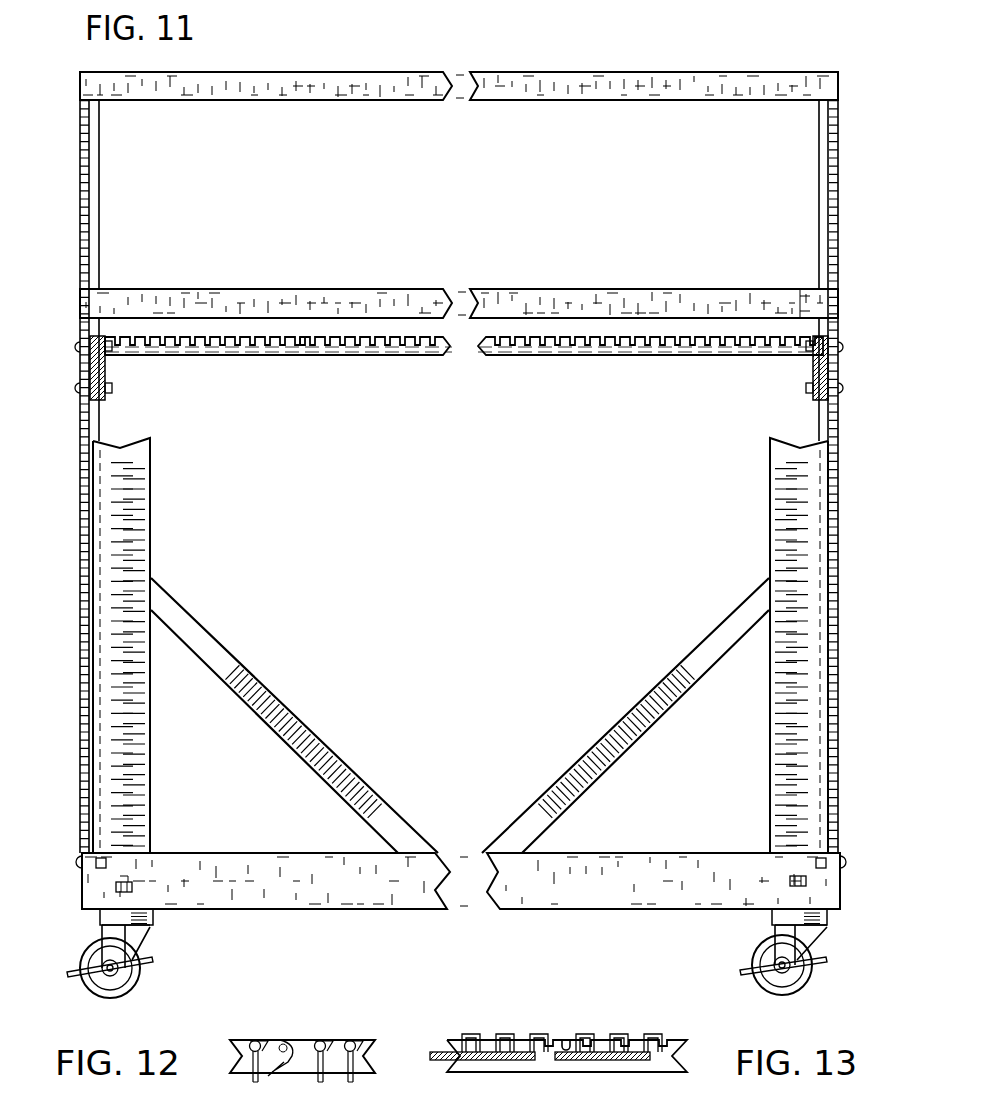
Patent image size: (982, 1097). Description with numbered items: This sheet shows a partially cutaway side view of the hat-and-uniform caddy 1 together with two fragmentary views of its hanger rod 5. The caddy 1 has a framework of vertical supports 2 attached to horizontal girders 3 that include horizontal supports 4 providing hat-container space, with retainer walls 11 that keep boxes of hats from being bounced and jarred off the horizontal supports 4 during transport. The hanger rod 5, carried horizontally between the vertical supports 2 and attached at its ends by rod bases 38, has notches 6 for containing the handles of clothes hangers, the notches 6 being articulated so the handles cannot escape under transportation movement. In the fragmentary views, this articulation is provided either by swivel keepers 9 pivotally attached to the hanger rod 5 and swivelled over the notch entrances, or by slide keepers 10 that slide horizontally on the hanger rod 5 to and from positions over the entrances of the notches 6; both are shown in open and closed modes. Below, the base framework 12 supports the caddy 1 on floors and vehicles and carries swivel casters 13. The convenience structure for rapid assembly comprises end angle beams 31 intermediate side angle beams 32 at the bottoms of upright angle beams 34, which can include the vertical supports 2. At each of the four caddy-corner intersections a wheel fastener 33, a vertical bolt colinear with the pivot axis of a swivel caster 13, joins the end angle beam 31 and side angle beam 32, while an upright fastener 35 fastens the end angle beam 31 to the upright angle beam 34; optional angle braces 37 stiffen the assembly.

In FIG. 11, the hat-and-uniform caddy 1 is at (748, 47).
In FIG. 11, the vertical supports 2 is at (99, 190).
In FIG. 11, the horizontal girders 3 is at (333, 73).
In FIG. 11, the horizontal supports 4 is at (545, 300).
In FIG. 11, the hanger rod 5 is at (248, 356).
In FIG. 12, the hanger rod 5 is at (232, 1040).
In FIG. 13, the hanger rod 5 is at (450, 1040).
In FIG. 11, the notches 6 is at (292, 345).
In FIG. 12, the notches 6 is at (284, 1040).
In FIG. 13, the notches 6 is at (566, 1040).
In FIG. 12, the swivel keepers 9 is at (322, 1040).
In FIG. 13, the slide keepers 10 is at (497, 1036).
In FIG. 11, the retainer walls 11 is at (655, 298).
In FIG. 11, the base framework 12 is at (178, 930).
In FIG. 11, the swivel casters 13 is at (125, 985).
In FIG. 11, the end angle beams 31 is at (250, 870).
In FIG. 11, the side angle beams 32 is at (108, 903).
In FIG. 11, the wheel fastener 33 is at (126, 880).
In FIG. 11, the upright angle beams 34 is at (132, 538).
In FIG. 11, the upright fastener 35 is at (103, 862).
In FIG. 11, the angle braces 37 is at (316, 740).
In FIG. 11, the rod bases 38 is at (105, 372).